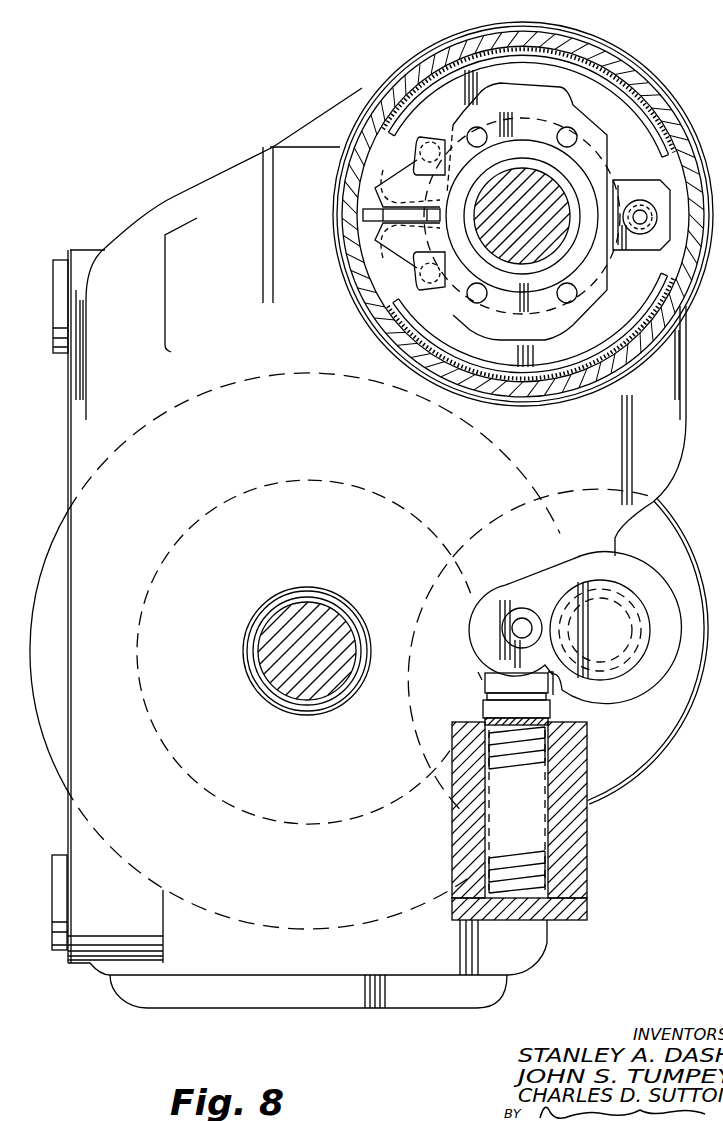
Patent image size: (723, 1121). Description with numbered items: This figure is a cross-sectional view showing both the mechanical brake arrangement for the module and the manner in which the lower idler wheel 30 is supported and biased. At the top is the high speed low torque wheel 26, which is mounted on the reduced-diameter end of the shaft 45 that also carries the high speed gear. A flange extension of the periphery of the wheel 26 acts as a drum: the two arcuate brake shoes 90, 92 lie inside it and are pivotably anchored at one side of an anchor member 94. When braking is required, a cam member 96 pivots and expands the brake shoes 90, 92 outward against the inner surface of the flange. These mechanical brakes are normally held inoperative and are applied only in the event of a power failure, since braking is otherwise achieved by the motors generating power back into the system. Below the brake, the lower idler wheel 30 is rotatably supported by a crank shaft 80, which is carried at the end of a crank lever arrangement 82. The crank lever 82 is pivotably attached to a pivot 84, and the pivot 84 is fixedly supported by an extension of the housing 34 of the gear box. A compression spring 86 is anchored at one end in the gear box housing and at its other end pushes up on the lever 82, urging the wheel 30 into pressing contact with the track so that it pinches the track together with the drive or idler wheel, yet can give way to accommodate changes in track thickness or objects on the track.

The high speed wheel 26 is at (637, 73).
The lower idler wheel 30 is at (673, 730).
The housing 34 is at (663, 600).
The shaft 45 is at (557, 240).
The crank shaft 80 is at (522, 606).
The crank lever arrangement 82 is at (557, 573).
The pivot 84 is at (613, 580).
The compression spring 86 is at (540, 762).
The brake shoe 90 is at (445, 83).
The brake shoe 92 is at (440, 345).
The anchor member 94 is at (642, 197).
The cam member 96 is at (352, 227).